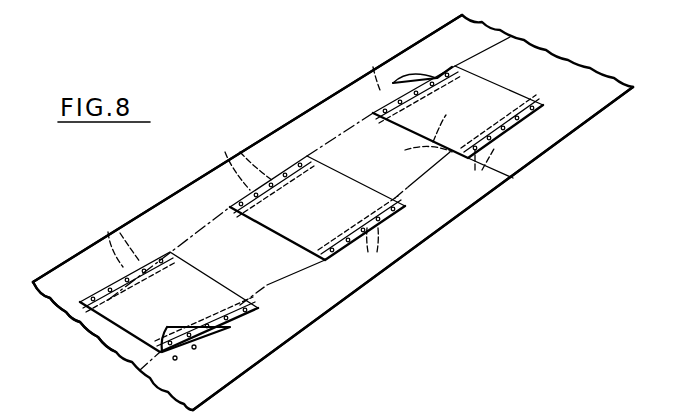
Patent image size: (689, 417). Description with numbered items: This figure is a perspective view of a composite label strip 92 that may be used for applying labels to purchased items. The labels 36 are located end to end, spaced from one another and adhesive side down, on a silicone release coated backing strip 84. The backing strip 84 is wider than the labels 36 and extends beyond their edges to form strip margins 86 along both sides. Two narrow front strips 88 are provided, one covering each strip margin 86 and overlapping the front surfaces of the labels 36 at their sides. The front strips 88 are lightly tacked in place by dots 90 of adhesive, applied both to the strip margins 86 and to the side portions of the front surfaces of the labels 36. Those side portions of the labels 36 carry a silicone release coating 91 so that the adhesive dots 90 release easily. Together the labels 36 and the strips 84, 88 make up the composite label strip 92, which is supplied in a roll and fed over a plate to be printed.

The label 36 is at (195, 281).
The backing strip 84 is at (348, 298).
The strip margin 86 is at (273, 148).
The front strip 88 is at (412, 54).
The adhesive dot 90 is at (112, 236).
The silicone release coating 91 is at (178, 327).
The composite label strip 92 is at (107, 352).